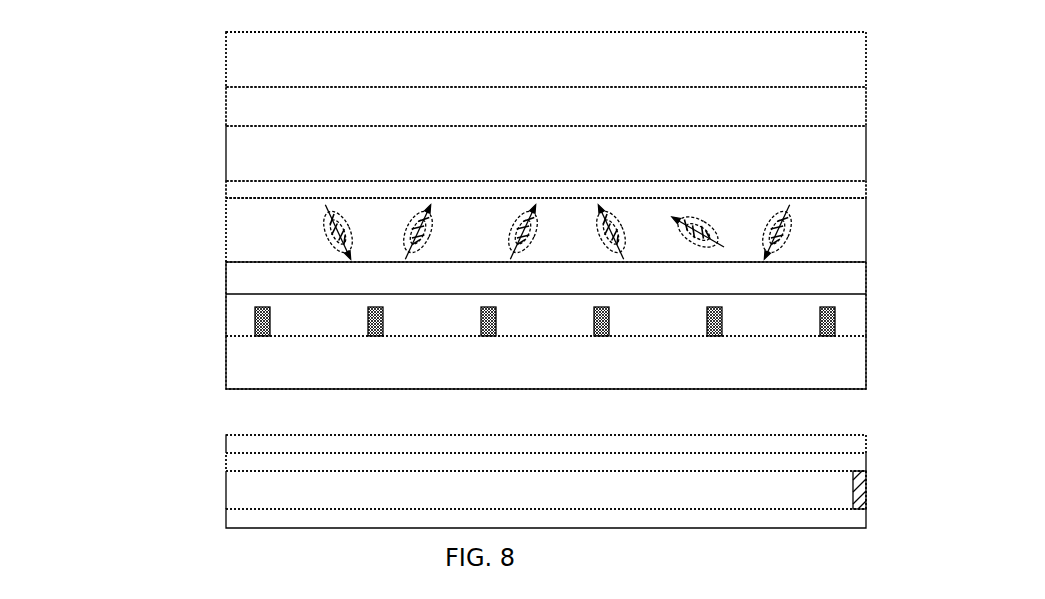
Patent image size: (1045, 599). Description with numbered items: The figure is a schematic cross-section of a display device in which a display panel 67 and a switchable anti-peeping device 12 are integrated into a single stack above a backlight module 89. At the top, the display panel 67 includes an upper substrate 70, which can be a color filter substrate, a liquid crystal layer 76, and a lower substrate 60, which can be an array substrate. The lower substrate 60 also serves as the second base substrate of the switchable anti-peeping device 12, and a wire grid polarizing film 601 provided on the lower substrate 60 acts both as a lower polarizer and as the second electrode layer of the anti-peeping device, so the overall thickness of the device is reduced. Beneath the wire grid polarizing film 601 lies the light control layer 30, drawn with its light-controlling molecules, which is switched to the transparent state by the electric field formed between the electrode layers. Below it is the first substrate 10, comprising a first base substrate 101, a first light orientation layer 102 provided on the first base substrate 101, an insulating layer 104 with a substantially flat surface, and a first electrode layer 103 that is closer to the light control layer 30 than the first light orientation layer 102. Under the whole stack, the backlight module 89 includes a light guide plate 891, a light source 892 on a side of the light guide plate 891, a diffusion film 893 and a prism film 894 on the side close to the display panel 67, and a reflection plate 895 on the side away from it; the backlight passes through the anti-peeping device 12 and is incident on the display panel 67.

The switchable anti-peeping device 12 is at (122, 240).
The display panel 67 is at (123, 108).
The upper substrate 70 is at (843, 63).
The liquid crystal layer 76 is at (843, 107).
The lower substrate 60 is at (843, 150).
The wire grid polarizing film 601 is at (843, 184).
The light control layer 30 is at (250, 231).
The first substrate 10 is at (208, 262).
The first electrode layer 103 is at (850, 279).
The insulating layer 104 is at (850, 311).
The first light orientation layer 102 is at (835, 321).
The first base substrate 101 is at (858, 366).
The backlight module 89 is at (140, 490).
The prism film 894 is at (850, 438).
The diffusion film 893 is at (848, 457).
The light source 892 is at (866, 477).
The light guide plate 891 is at (845, 496).
The reflection plate 895 is at (848, 518).